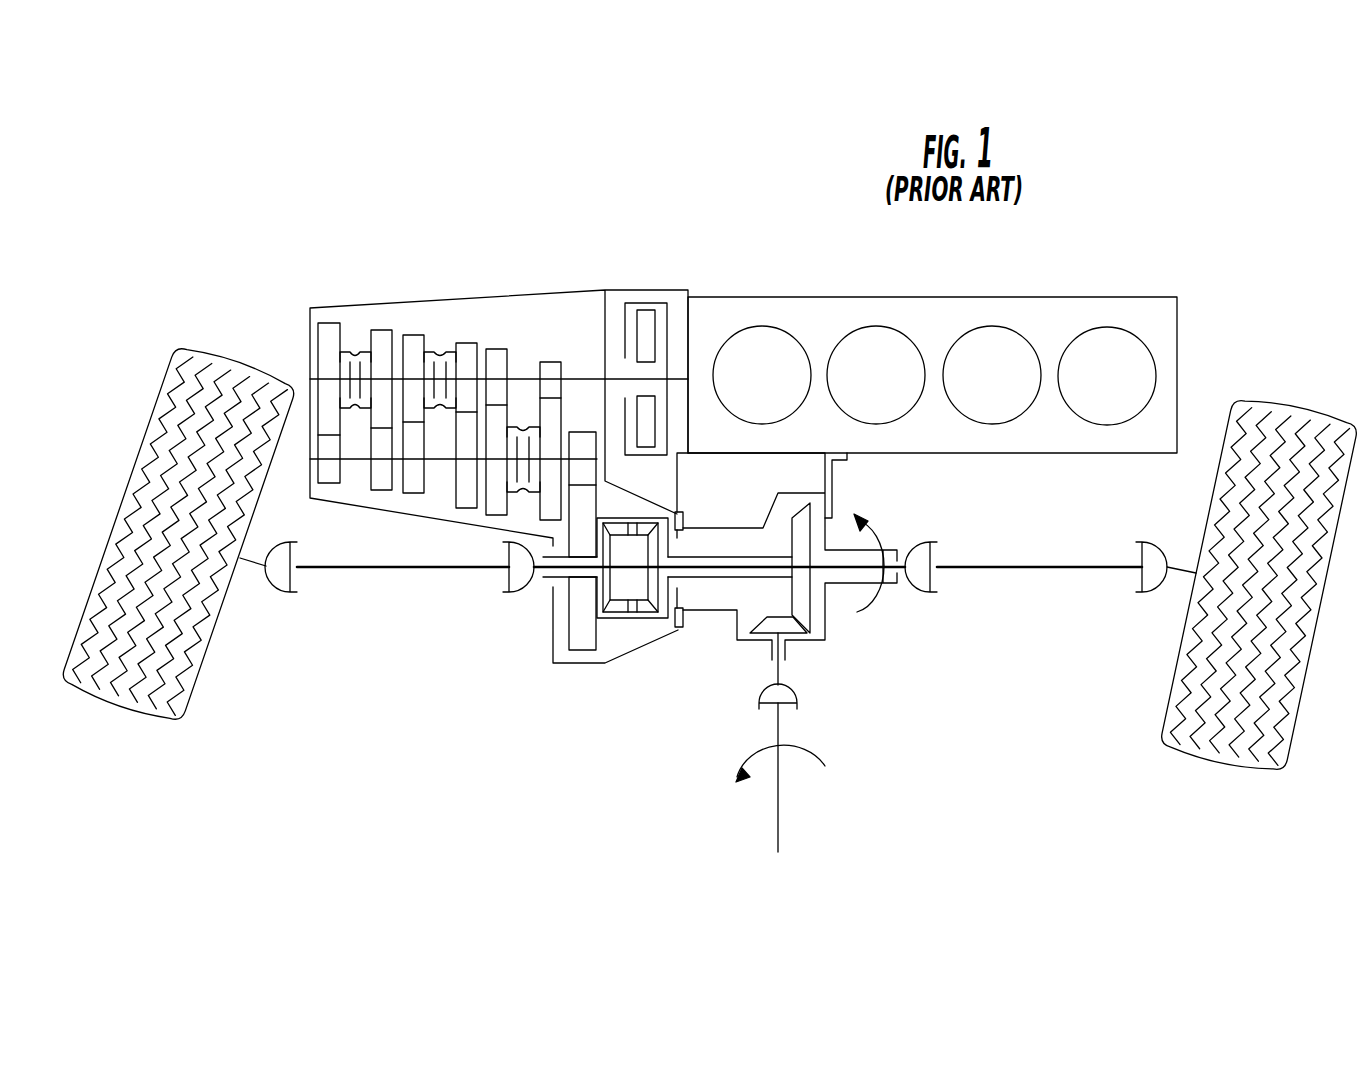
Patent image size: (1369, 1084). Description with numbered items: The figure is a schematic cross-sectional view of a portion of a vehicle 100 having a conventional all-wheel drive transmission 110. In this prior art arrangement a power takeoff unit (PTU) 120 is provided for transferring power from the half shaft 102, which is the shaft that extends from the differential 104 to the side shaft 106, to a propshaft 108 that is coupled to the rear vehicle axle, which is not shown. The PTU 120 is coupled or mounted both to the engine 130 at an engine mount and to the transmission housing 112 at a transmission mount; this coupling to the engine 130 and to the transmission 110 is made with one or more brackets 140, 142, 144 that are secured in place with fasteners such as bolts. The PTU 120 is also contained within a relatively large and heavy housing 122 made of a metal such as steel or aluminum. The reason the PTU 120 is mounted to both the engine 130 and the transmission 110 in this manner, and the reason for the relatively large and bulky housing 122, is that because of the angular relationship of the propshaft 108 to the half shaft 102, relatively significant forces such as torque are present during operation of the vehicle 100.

The vehicle 100 is at (522, 250).
The half shaft 102 is at (735, 572).
The differential 104 is at (628, 582).
The side shaft 106 is at (1023, 568).
The propshaft 108 is at (778, 805).
The all-wheel drive transmission 110 is at (342, 305).
The transmission housing 112 is at (653, 645).
The power takeoff unit 120 is at (838, 654).
The housing 122 is at (825, 622).
The engine 130 is at (1093, 297).
The bracket 140 is at (833, 477).
The bracket 142 is at (683, 622).
The bracket 144 is at (687, 519).